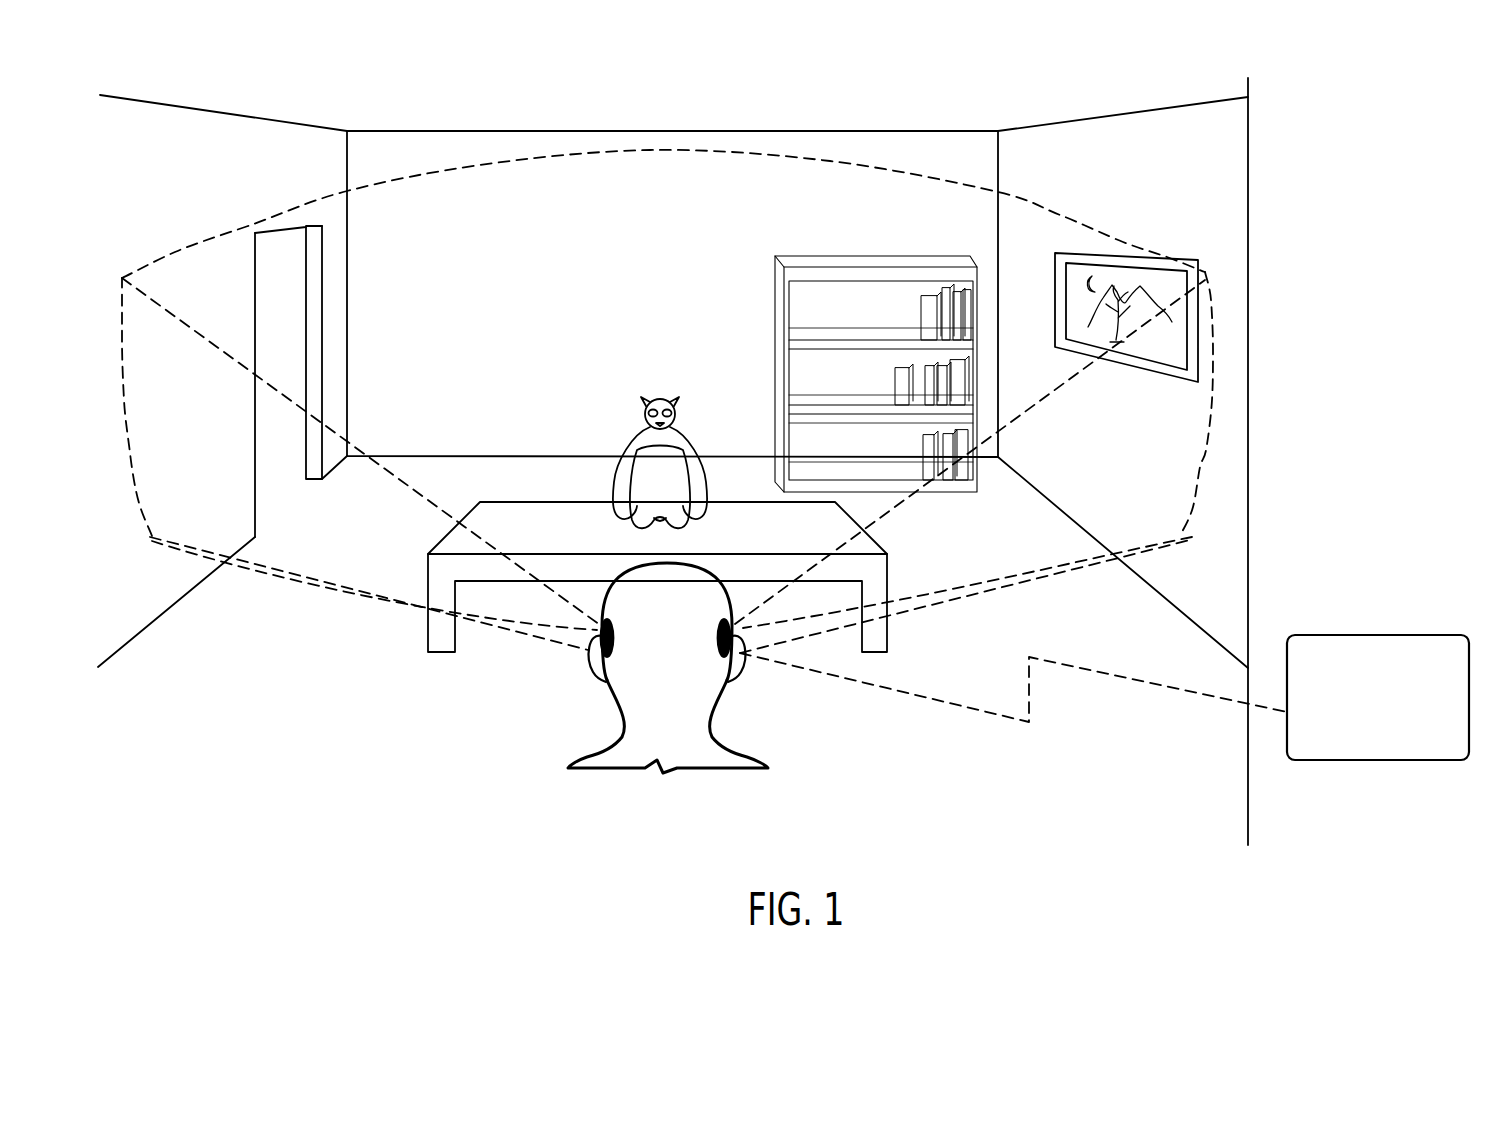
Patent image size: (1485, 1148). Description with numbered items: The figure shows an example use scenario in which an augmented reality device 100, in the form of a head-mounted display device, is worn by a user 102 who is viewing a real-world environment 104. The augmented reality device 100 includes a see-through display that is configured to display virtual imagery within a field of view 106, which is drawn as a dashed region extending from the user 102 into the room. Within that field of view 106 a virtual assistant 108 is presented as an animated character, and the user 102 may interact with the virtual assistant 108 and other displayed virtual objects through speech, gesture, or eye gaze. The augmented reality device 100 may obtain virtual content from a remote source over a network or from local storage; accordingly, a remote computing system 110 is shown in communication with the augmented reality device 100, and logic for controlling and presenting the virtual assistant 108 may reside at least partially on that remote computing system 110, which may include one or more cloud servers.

The augmented reality device 100 is at (600, 680).
The user 102 is at (652, 643).
The real-world environment 104 is at (931, 112).
The field of view 106 is at (437, 170).
The virtual assistant 108 is at (645, 420).
The remote computing system 110 is at (1368, 635).